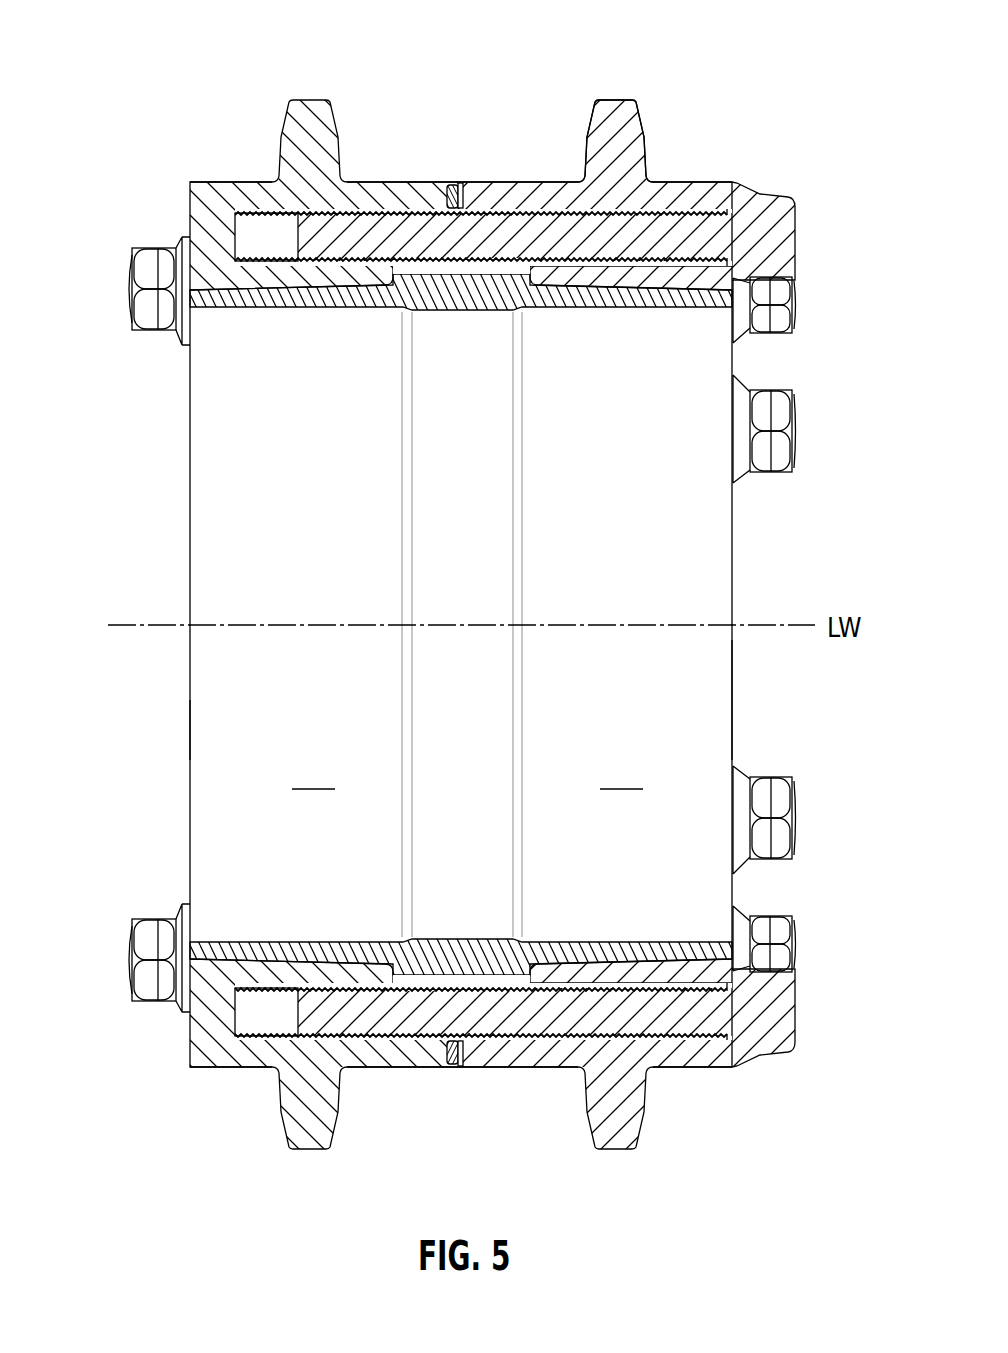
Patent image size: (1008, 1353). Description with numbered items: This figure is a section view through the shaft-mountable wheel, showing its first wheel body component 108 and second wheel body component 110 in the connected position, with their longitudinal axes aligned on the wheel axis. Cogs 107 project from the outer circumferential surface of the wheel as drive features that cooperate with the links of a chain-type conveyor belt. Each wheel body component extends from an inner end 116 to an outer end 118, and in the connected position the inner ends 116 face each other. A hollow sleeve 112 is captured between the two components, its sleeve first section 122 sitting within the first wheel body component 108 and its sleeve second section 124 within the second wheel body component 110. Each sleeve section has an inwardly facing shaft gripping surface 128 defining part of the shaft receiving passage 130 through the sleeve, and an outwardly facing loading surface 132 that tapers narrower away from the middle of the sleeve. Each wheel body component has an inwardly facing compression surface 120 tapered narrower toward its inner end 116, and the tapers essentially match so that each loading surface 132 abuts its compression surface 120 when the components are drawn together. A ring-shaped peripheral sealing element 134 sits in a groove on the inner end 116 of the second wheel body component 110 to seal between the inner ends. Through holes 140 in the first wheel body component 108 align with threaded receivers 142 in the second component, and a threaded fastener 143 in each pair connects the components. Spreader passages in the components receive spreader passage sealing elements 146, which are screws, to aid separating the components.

The cogs 107 is at (305, 98).
The first wheel body component 108 is at (582, 180).
The second wheel body component 110 is at (236, 181).
The hollow sleeve 112 is at (750, 576).
The inner end 116 is at (437, 178).
The outer end 118 is at (165, 152).
The compression surface 120 is at (237, 283).
The sleeve first section 122 is at (737, 652).
The sleeve second section 124 is at (189, 730).
The shaft gripping surface 128 is at (468, 774).
The shaft receiving passage 130 is at (680, 704).
The loading surface 132 is at (295, 296).
The peripheral sealing element 134 is at (453, 184).
The through holes 140 is at (661, 211).
The threaded receivers 142 is at (362, 270).
The threaded fastener 143 is at (793, 200).
The spreader passage sealing element 146 is at (796, 300).